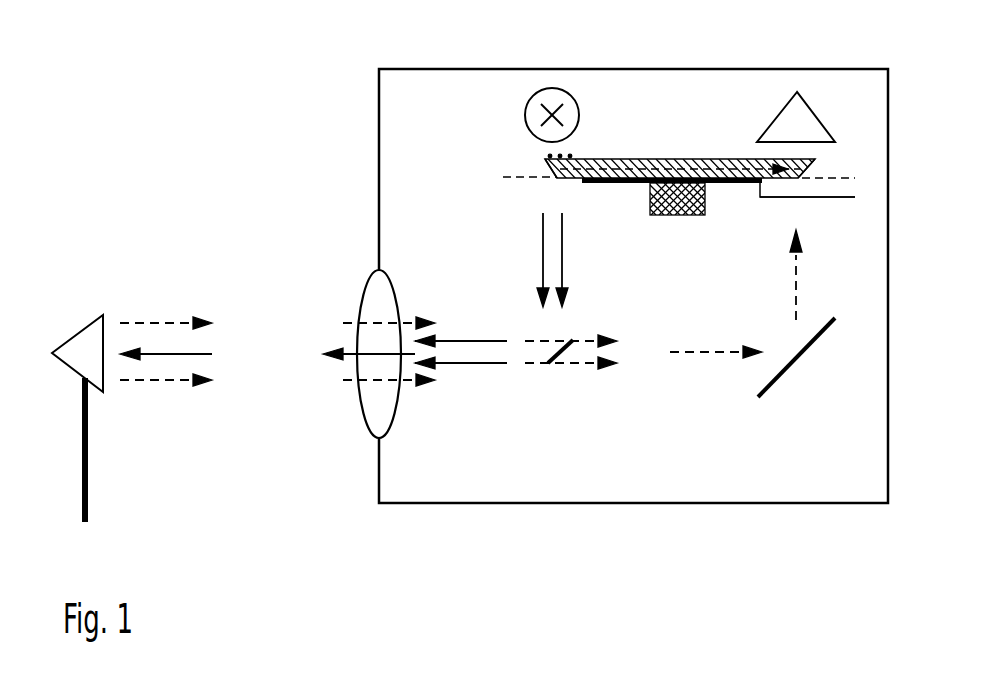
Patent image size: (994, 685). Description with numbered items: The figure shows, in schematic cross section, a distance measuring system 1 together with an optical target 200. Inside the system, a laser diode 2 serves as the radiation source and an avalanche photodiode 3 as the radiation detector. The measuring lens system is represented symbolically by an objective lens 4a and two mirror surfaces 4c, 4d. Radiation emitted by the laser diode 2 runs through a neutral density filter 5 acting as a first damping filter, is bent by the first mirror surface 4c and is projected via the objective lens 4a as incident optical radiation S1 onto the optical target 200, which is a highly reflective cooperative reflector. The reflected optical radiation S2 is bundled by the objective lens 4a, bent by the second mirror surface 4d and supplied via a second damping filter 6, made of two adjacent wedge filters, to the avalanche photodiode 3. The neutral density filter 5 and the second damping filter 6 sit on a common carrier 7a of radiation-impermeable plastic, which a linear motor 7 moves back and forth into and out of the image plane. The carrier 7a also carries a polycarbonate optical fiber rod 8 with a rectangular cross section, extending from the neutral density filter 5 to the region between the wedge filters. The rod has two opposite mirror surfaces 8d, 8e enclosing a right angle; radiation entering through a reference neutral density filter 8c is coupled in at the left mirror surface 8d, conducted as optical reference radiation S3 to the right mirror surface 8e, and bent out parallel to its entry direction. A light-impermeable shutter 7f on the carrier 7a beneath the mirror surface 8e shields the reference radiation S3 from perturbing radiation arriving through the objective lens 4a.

The distance measuring system 1 is at (777, 69).
The laser diode 2 is at (526, 111).
The avalanche photodiode 3 is at (773, 118).
The objective lens 4a is at (365, 290).
The first mirror surface 4c is at (563, 353).
The second mirror surface 4d is at (800, 357).
The neutral density filter 5 is at (518, 180).
The second damping filter 6 is at (843, 177).
The linear motor 7 is at (706, 212).
The carrier 7a is at (612, 184).
The shutter 7f is at (840, 198).
The optical fiber rod 8 is at (610, 158).
The reference neutral density filter 8c is at (546, 160).
The first mirror surface 8d is at (548, 170).
The second mirror surface 8e is at (812, 167).
The optical target 200 is at (85, 327).
The incident optical radiation S1 is at (541, 250).
The reflected optical radiation S2 is at (797, 272).
The optical reference radiation S3 is at (663, 168).